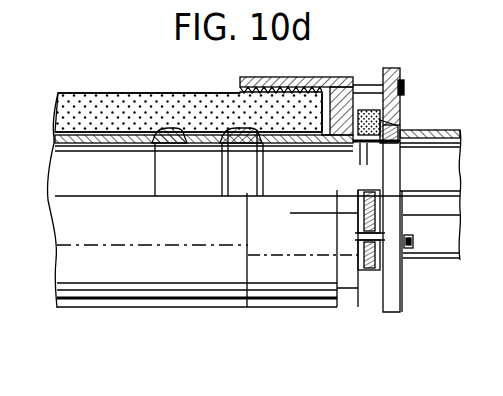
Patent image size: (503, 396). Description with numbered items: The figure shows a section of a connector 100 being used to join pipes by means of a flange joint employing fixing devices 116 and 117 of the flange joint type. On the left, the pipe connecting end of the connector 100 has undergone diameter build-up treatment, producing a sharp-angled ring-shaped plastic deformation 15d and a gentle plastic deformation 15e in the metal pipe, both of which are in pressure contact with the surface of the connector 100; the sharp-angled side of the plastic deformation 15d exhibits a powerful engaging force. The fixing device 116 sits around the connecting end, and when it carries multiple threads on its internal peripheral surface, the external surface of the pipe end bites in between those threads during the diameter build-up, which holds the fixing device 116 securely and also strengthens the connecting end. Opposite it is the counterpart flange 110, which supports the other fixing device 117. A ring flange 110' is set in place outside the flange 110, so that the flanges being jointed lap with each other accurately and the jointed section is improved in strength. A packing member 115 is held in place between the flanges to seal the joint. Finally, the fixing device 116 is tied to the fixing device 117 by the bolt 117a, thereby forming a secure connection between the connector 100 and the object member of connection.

The connector 100 is at (155, 172).
The sharp-angled ring-shaped plastic deformation 15d is at (165, 128).
The gentle plastic deformation 15e is at (237, 128).
The fixing device 116 is at (347, 77).
The flange 110 is at (407, 89).
The fixing device 117 is at (390, 68).
The bolt 117a is at (404, 88).
The packing member 115 is at (403, 151).
The ring flange 110' is at (344, 163).